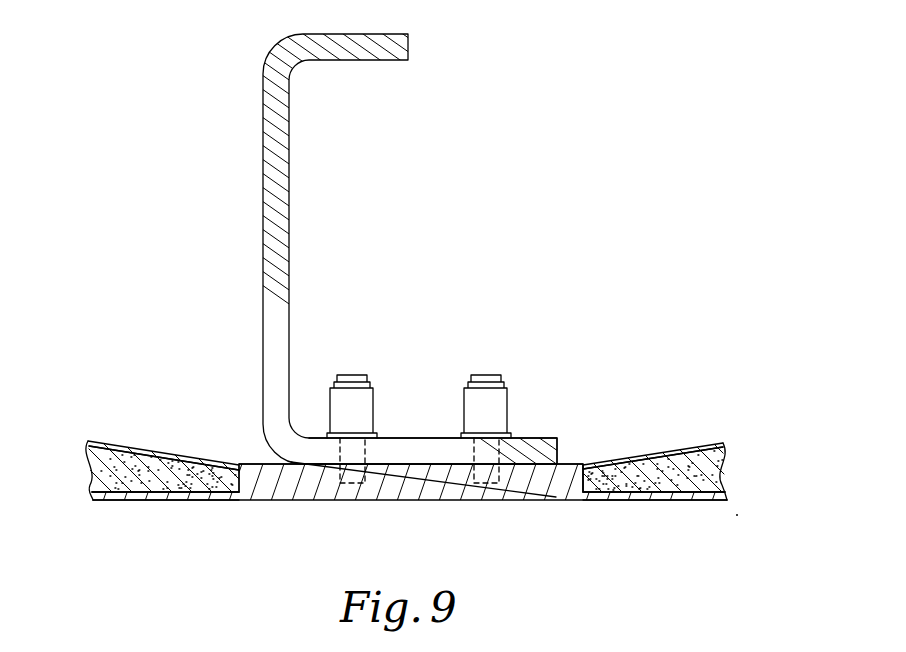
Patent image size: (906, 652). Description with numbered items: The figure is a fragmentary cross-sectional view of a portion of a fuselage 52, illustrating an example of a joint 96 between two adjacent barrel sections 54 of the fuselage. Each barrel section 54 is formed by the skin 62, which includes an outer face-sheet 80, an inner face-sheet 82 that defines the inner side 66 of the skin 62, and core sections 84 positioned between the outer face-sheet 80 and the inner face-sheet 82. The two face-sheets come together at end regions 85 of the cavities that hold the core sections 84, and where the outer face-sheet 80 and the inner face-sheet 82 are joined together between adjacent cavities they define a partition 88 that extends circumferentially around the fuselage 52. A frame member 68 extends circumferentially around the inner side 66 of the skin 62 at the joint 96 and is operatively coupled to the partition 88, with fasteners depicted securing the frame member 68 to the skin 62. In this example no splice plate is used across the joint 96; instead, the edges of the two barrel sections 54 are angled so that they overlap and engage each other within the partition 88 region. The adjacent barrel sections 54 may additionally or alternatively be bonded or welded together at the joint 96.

The fuselage 52 is at (702, 305).
The barrel section 54 is at (120, 372).
The skin 62 is at (703, 504).
The inner side 66 is at (563, 464).
The frame member 68 is at (263, 190).
The outer face-sheet 80 is at (136, 500).
The inner face-sheet 82 is at (130, 445).
The core section 84 is at (204, 500).
The end region 85 is at (238, 481).
The partition 88 is at (285, 500).
The joint 96 is at (411, 504).